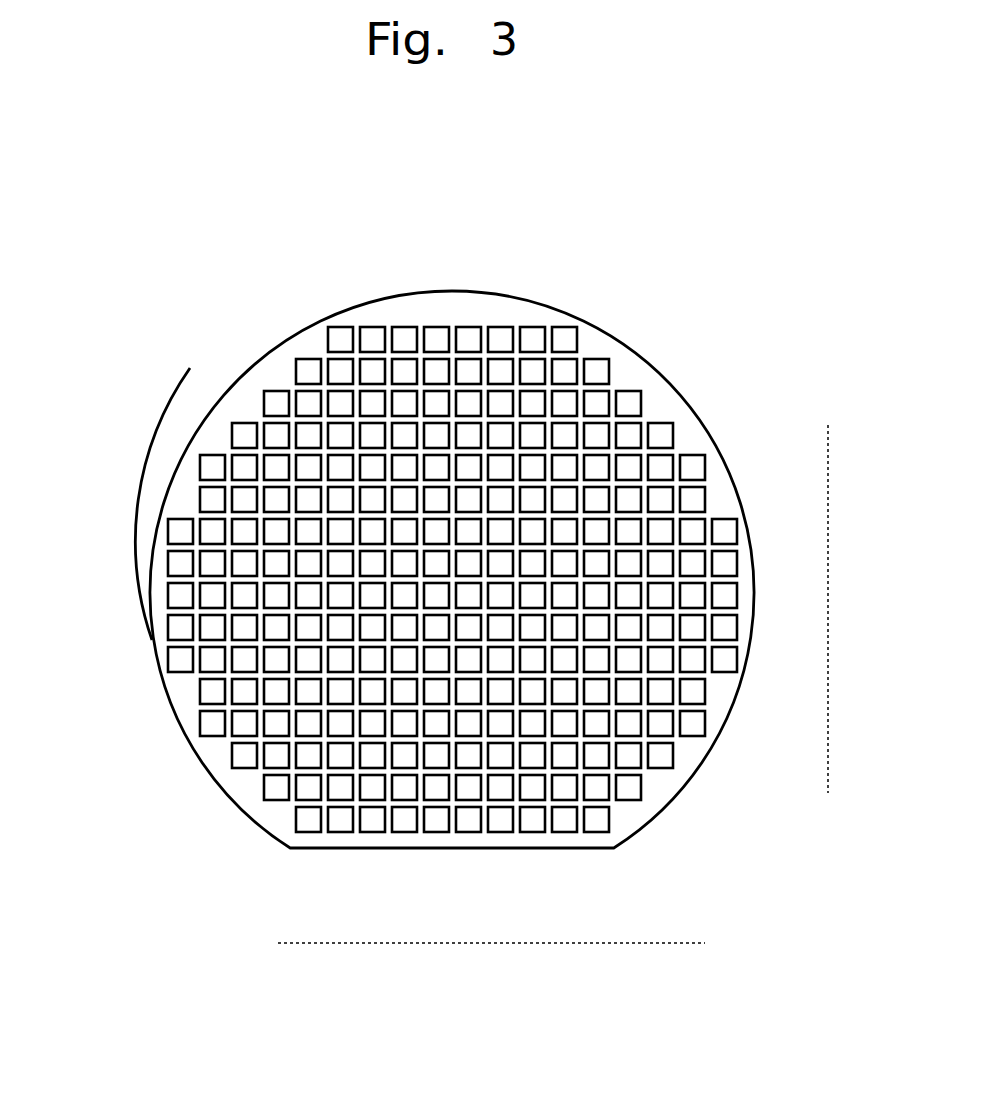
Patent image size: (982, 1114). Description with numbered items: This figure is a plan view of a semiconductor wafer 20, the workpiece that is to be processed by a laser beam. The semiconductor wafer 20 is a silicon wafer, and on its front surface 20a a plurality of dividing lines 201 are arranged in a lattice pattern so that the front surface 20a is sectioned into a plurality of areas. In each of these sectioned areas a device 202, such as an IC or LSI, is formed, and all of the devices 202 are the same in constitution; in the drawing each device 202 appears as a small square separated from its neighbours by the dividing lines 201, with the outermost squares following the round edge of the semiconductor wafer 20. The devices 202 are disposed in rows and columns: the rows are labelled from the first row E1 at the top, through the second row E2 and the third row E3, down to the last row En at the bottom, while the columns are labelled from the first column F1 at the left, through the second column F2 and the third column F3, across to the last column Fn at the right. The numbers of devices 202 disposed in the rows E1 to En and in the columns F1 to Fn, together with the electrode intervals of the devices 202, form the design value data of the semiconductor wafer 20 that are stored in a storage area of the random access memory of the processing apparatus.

The semiconductor wafer 20 is at (682, 294).
The front surface 20a is at (185, 482).
The dividing lines 201 is at (176, 608).
The device 202 is at (178, 562).
The row E1 is at (584, 342).
The row E2 is at (612, 373).
The row E3 is at (644, 404).
The row En is at (612, 813).
The column F1 is at (181, 673).
The column F2 is at (212, 738).
The column F3 is at (244, 770).
The column Fn is at (724, 677).